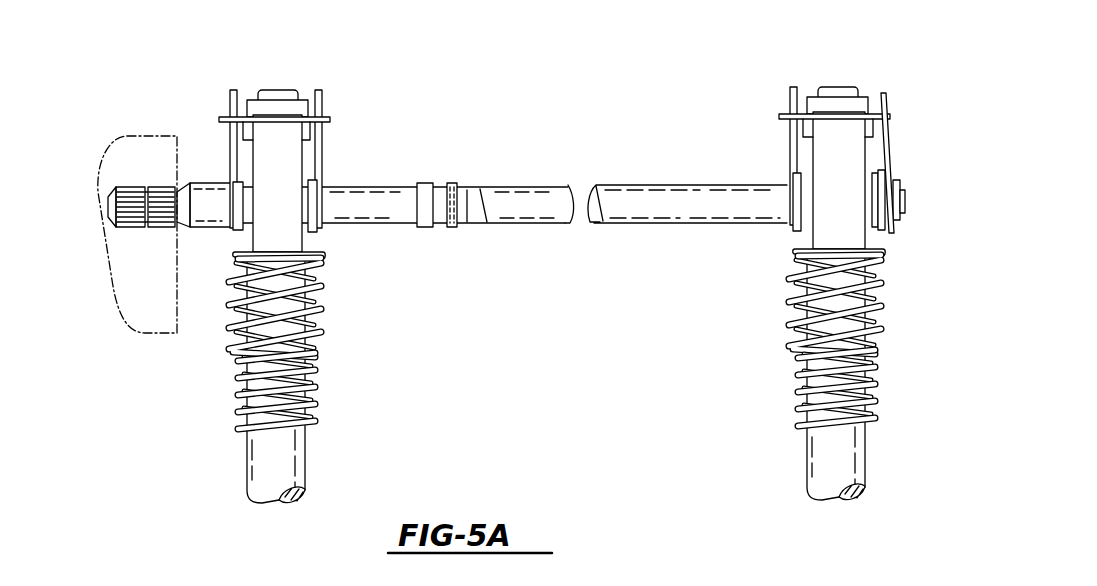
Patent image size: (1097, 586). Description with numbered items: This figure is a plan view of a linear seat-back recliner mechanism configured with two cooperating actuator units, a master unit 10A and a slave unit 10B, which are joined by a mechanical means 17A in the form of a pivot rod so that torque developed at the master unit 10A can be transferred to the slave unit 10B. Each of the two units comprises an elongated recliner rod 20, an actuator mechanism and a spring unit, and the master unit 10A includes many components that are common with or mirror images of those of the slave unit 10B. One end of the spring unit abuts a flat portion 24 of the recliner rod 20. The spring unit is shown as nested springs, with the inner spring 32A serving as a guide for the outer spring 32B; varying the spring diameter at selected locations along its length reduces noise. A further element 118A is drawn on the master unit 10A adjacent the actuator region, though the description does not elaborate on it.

The master unit 10A is at (767, 265).
The slave unit 10B is at (348, 371).
The mechanical means 17A is at (672, 192).
The slanted retaining pin / lever 118A is at (888, 139).
The flat portion 24 is at (828, 222).
The inner spring 32A is at (797, 373).
The outer spring 32B is at (797, 323).
The recliner rod 20 is at (817, 467).